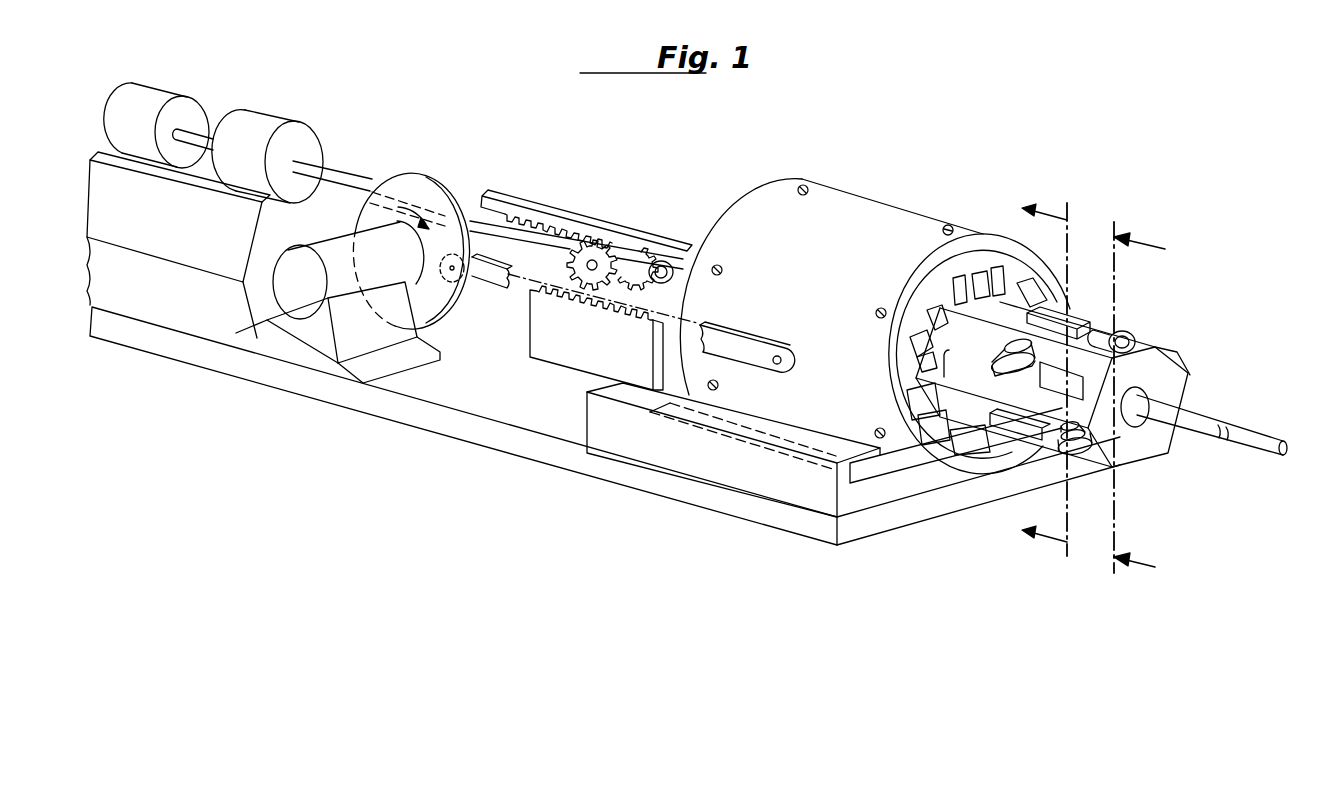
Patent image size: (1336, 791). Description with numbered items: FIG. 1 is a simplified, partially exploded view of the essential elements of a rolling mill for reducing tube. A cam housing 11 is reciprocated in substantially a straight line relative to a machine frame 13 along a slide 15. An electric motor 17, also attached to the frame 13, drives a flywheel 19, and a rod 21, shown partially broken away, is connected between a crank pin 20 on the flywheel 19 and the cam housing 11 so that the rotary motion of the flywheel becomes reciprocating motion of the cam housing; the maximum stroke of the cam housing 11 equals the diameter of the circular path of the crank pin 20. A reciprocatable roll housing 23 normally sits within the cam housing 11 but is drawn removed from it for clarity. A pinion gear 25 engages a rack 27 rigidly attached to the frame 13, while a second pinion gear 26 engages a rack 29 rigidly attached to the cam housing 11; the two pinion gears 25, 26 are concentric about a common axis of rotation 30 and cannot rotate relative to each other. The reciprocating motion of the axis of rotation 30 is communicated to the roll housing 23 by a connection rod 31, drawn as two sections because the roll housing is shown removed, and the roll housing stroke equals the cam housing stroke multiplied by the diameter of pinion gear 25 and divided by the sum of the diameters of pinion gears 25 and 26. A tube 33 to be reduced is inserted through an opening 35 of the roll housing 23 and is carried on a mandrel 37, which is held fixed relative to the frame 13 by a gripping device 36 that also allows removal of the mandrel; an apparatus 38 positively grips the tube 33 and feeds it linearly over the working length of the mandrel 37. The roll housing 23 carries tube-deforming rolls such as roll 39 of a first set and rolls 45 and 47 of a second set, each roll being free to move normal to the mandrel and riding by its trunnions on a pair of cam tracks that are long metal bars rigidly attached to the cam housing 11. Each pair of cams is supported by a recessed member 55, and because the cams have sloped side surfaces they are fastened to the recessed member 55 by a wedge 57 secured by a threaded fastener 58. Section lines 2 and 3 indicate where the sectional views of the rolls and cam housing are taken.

The cam housing 11 is at (822, 205).
The machine frame 13 is at (722, 502).
The slide 15 is at (870, 498).
The electric motor 17 is at (290, 280).
The flywheel 19 is at (413, 187).
The crank pin 20 is at (452, 272).
The rod 21 is at (492, 280).
The roll housing 23 is at (1163, 345).
The pinion gear 25 is at (628, 288).
The second pinion gear 26 is at (580, 255).
The rack 27 is at (570, 302).
The rack 29 is at (530, 222).
The axis of rotation 30 is at (587, 266).
The connection rod 31 is at (650, 257).
The tube 33 is at (343, 175).
The opening 35 is at (1145, 418).
The gripping device 36 is at (152, 96).
The mandrel 37 is at (202, 131).
The apparatus 38 is at (270, 142).
The roll 39 is at (1000, 358).
The roll 45 is at (1120, 333).
The roll 47 is at (1092, 445).
The recessed member 55 is at (962, 263).
The wedge 57 is at (977, 275).
The threaded fastener 58 is at (948, 227).
The section line 2 is at (1034, 372).
The section line 3 is at (1149, 402).